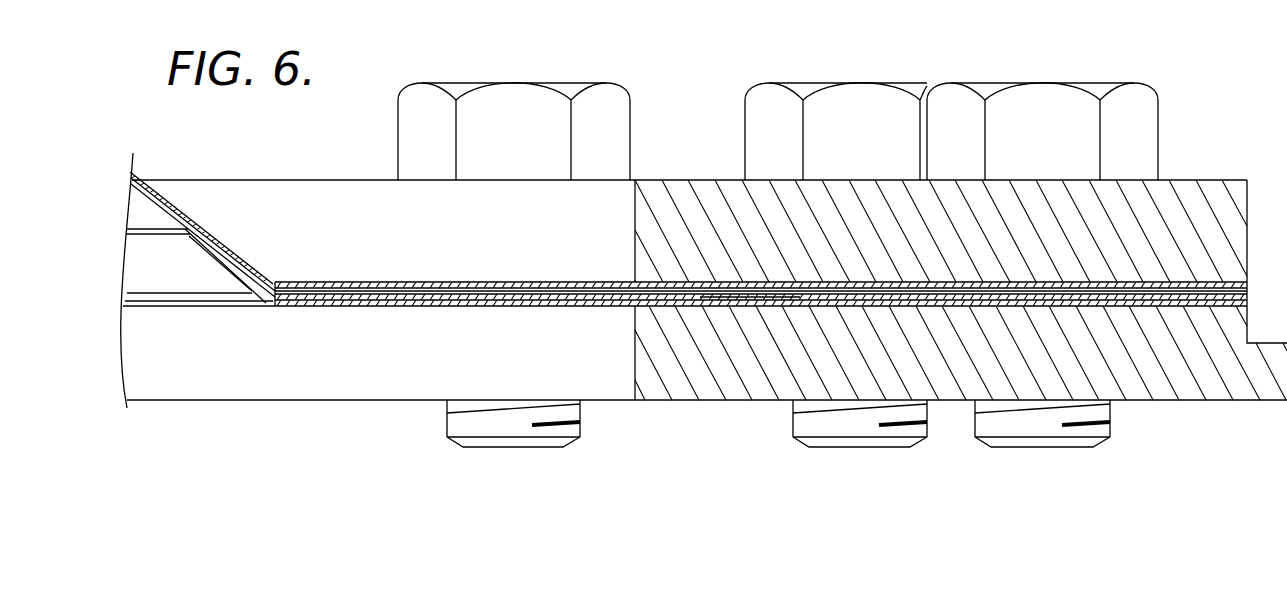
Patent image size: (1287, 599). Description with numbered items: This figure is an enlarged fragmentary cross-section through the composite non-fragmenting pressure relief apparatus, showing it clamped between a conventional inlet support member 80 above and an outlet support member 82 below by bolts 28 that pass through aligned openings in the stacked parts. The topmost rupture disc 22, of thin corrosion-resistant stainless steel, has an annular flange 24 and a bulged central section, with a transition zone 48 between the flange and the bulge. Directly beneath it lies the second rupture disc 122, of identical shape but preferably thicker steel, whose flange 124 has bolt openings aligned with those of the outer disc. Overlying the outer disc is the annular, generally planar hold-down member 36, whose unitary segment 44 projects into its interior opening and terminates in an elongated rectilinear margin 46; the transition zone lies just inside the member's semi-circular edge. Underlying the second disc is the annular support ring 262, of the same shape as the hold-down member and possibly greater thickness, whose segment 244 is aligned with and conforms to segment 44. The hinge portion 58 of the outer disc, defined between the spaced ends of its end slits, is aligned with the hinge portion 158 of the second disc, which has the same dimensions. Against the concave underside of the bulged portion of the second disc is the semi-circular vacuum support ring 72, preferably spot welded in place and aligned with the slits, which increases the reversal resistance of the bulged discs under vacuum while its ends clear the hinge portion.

The rupture disc 22 is at (193, 188).
The second rupture disc 122 is at (146, 209).
The vacuum support ring 72 is at (138, 278).
The transition zone 48 is at (272, 280).
The margin 46 is at (275, 283).
The hinge portion 58 is at (388, 282).
The segment 44 is at (430, 284).
The hinge portion 158 is at (372, 299).
The segment 244 is at (418, 306).
The hold-down member 36 is at (589, 273).
The support ring 262 is at (599, 325).
The annular flange 24 is at (727, 292).
The flange 124 is at (745, 298).
The bolts 28 is at (513, 97).
The inlet support member 80 is at (1205, 193).
The outlet support member 82 is at (1212, 388).